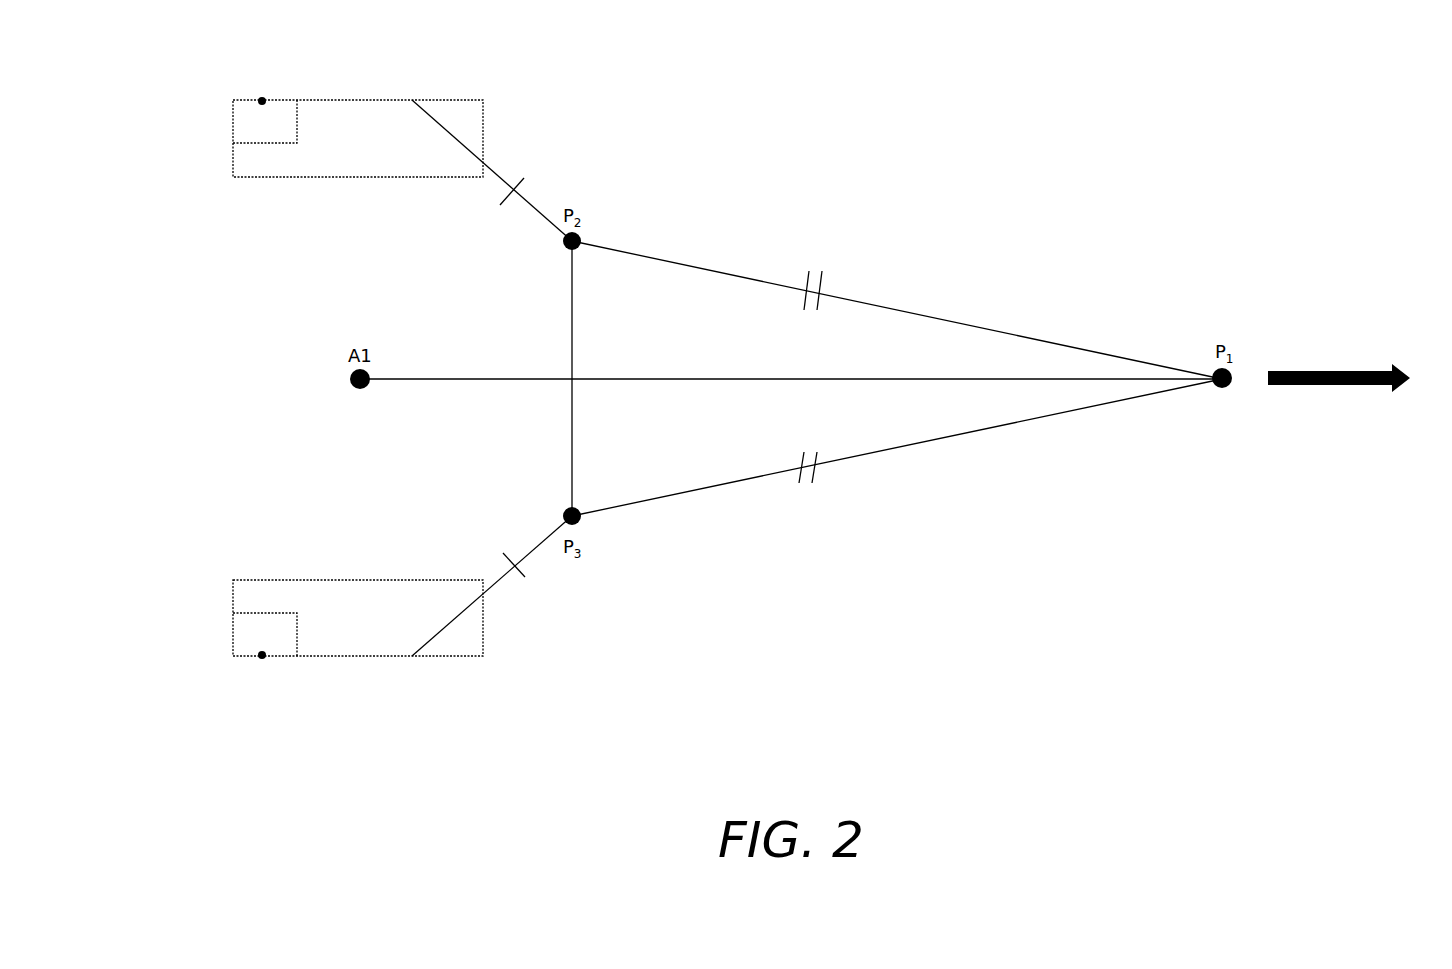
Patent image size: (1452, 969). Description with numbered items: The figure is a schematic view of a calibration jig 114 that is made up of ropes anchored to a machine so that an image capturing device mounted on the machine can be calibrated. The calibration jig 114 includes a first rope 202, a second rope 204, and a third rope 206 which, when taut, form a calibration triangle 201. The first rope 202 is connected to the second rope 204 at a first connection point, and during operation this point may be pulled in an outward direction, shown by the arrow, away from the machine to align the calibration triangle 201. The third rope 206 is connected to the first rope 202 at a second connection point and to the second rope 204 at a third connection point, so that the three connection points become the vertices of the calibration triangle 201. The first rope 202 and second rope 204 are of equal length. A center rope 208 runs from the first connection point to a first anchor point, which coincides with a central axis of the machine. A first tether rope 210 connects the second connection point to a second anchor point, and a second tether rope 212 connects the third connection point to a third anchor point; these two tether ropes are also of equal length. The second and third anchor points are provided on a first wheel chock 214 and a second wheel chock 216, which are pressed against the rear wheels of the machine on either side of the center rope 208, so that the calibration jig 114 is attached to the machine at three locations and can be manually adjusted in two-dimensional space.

The calibration jig 114 is at (1118, 114).
The calibration triangle 201 is at (897, 383).
The first rope 202 is at (978, 326).
The second rope 204 is at (965, 435).
The third rope 206 is at (574, 327).
The center rope 208 is at (692, 381).
The first tether rope 210 is at (532, 203).
The second tether rope 212 is at (503, 578).
The first wheel chock 214 is at (243, 122).
The second wheel chock 216 is at (250, 633).